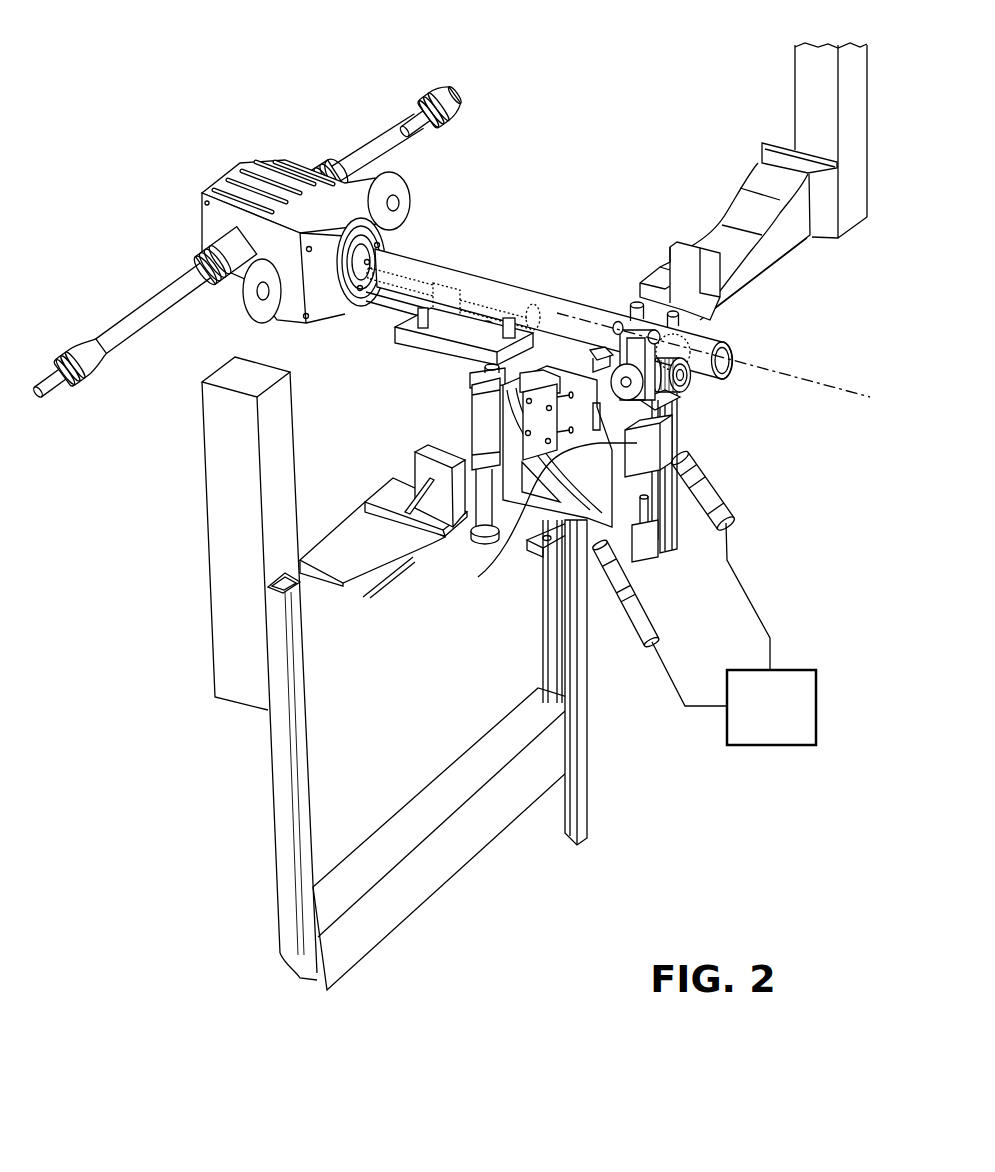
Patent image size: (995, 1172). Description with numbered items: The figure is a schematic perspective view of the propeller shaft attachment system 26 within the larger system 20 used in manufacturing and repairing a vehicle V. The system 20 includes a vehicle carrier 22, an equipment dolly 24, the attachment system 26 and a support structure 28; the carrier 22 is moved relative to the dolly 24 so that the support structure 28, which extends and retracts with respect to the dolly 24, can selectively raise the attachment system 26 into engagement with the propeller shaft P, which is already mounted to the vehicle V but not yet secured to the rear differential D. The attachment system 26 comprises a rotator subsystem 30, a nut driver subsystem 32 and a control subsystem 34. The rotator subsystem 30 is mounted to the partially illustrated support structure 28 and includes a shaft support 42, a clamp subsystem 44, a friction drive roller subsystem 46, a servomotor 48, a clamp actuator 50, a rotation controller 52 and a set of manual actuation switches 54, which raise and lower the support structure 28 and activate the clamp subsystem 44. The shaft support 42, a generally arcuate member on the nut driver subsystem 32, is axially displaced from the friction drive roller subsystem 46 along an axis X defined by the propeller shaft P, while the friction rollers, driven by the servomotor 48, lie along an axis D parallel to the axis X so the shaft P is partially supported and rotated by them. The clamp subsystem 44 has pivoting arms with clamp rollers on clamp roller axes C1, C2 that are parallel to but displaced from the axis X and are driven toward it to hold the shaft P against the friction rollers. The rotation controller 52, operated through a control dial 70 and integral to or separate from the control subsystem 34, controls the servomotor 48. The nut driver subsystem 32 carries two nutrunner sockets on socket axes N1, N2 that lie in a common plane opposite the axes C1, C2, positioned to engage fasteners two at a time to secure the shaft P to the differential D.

The system 20 is at (714, 102).
The vehicle carrier 22 is at (737, 208).
The equipment dolly 24 is at (468, 852).
The attachment system 26 is at (606, 821).
The support structure 28 is at (587, 742).
The rotator subsystem 30 is at (690, 433).
The nut driver subsystem 32 is at (427, 365).
The control subsystem 34 is at (814, 655).
The shaft support 42 is at (533, 310).
The clamp subsystem 44 is at (637, 320).
The friction drive roller subsystem 46 is at (690, 397).
The servomotor 48 is at (543, 516).
The clamp actuator 50 is at (657, 567).
The rotation controller 52 is at (760, 722).
The manual actuation switches 54 is at (598, 588).
The control dial 70 is at (678, 513).
The rear differential D is at (357, 122).
The vehicle V is at (545, 115).
The socket axis N1 is at (393, 307).
The socket axis N2 is at (410, 290).
The clamp roller axis C1 is at (566, 302).
The clamp roller axis C2 is at (620, 304).
The propeller shaft P is at (756, 350).
The axis X is at (716, 355).